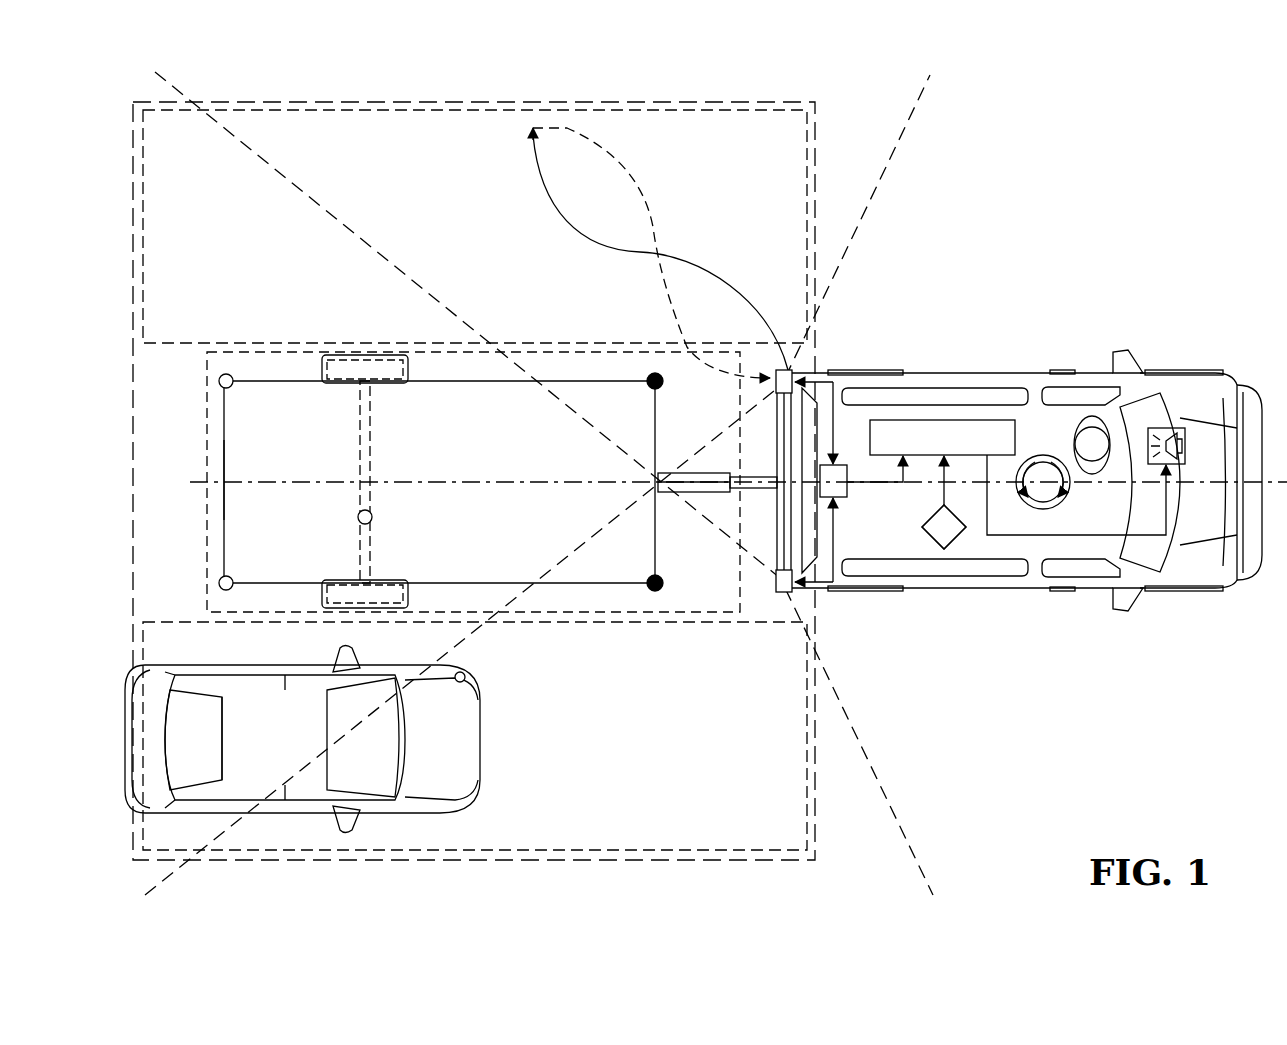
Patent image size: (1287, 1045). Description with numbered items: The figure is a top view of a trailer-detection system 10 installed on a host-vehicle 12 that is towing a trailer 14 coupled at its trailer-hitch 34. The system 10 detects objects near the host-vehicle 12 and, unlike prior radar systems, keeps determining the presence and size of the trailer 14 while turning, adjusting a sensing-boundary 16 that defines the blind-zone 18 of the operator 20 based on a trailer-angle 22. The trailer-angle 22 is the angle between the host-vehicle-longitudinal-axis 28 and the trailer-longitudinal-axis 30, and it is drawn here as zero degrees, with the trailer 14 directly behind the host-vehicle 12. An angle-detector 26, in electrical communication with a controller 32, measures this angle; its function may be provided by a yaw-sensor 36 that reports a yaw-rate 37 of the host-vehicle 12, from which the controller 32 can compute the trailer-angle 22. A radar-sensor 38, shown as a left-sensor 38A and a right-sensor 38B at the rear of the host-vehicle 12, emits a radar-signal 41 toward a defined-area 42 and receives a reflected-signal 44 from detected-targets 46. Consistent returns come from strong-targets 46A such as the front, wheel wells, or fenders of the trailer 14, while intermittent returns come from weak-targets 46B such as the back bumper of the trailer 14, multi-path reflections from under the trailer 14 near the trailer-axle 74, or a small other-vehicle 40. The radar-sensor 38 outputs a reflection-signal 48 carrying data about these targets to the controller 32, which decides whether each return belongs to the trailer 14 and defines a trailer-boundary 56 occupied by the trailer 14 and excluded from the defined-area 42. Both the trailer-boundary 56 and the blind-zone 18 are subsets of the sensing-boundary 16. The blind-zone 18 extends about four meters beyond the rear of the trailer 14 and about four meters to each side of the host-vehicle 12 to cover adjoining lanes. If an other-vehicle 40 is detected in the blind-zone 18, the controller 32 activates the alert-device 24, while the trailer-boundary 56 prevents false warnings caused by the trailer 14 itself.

The trailer-detection system 10 is at (1110, 178).
The host-vehicle 12 is at (1002, 493).
The trailer 14 is at (423, 540).
The sensing-boundary 16 is at (133, 220).
The blind-zone 18 is at (795, 168).
The operator 20 is at (1090, 416).
The trailer-angle 22 is at (224, 480).
The alert-device 24 is at (1163, 428).
The angle-detector 26 is at (946, 550).
The host-vehicle-longitudinal-axis 28 is at (1230, 585).
The trailer-longitudinal-axis 30 is at (205, 482).
The controller 32 is at (920, 420).
The trailer-hitch 34 is at (697, 493).
The yaw-sensor 36 is at (958, 537).
The yaw-rate 37 is at (1036, 458).
The radar-sensor 38 is at (817, 493).
The left-sensor 38A is at (795, 370).
The right-sensor 38B is at (783, 593).
The other-vehicle 40 is at (455, 810).
The radar-signal 41 is at (550, 207).
The defined-area 42 is at (893, 115).
The reflected-signal 44 is at (643, 178).
The detected-targets 46 is at (658, 590).
The strong-targets 46A is at (652, 390).
The weak-targets 46B is at (219, 382).
The reflection-signal 48 is at (850, 484).
The trailer-boundary 56 is at (207, 352).
The trailer-axle 74 is at (357, 422).